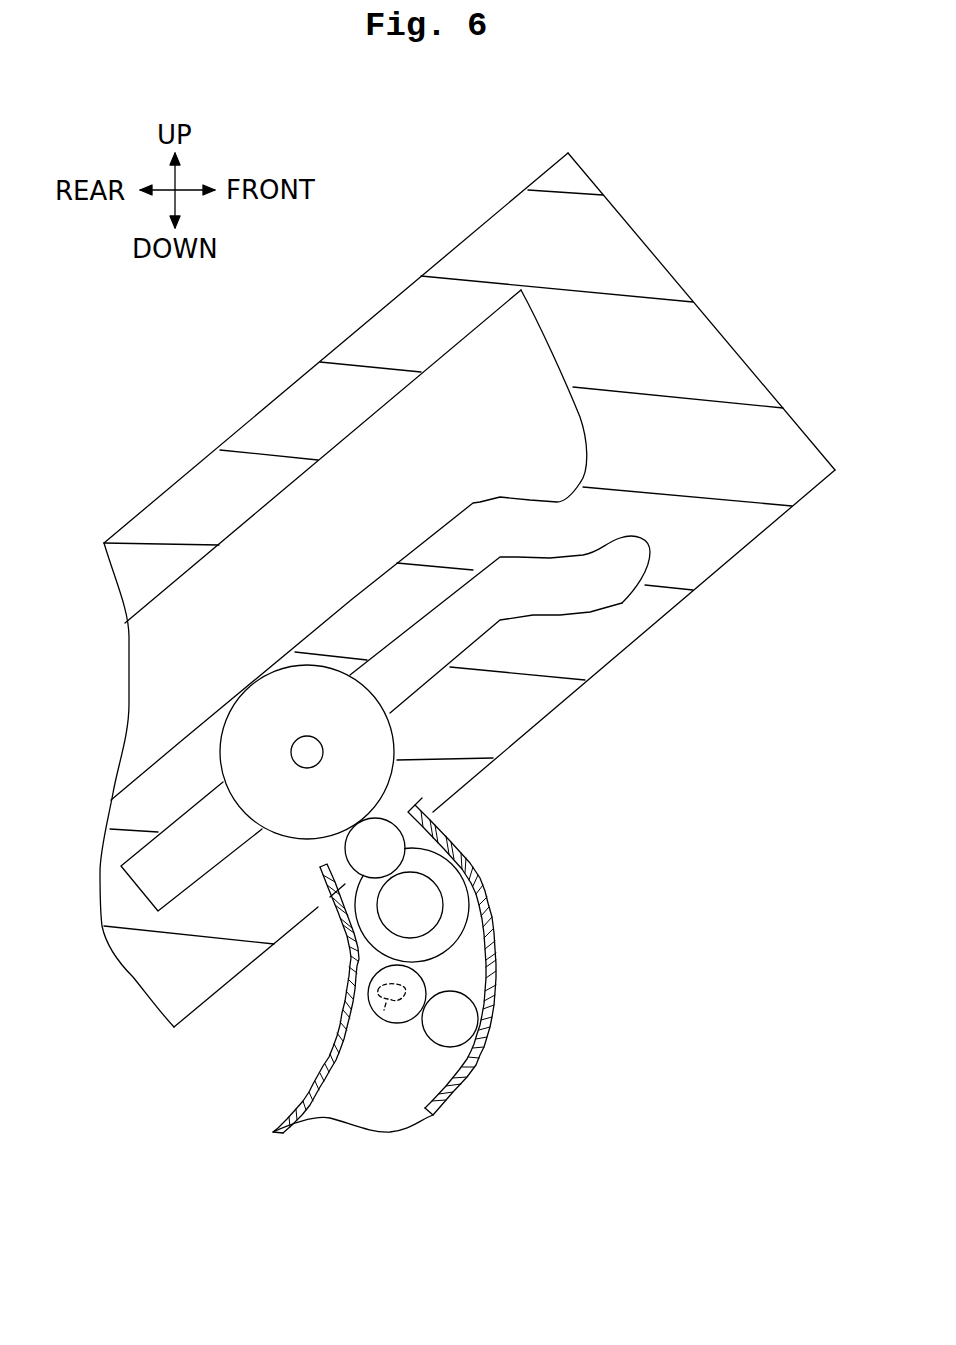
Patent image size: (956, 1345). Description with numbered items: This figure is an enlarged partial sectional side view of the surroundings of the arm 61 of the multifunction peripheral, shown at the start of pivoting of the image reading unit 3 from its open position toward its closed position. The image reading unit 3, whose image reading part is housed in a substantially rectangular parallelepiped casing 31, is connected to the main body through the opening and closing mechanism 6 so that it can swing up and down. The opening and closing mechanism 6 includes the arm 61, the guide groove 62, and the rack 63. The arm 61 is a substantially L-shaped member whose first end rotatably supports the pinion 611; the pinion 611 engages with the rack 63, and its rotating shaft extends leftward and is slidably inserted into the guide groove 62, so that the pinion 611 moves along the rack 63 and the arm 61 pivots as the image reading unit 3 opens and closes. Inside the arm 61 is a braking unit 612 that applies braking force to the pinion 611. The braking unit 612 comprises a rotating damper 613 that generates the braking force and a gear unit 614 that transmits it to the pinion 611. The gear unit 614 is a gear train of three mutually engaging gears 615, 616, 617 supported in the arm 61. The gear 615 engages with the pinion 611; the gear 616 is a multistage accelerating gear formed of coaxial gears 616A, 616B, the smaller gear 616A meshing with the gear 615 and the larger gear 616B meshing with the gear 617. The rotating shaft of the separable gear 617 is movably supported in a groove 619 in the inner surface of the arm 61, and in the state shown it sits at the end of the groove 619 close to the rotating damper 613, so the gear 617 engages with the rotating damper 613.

The image reading unit 3 is at (467, 565).
The casing 31 is at (410, 285).
The rack 63 is at (340, 442).
The guide groove 62 is at (621, 604).
The opening and closing mechanism 6 is at (450, 899).
The pinion 611 is at (397, 742).
The arm 61 is at (470, 1085).
The braking unit 612 is at (426, 951).
The gear unit 614 is at (409, 951).
The gear 615 is at (402, 830).
The gear 616 is at (445, 878).
The gear 616A is at (380, 908).
The gear 616B is at (372, 947).
The gear 617 is at (423, 982).
The groove 619 is at (382, 1014).
The rotating damper 613 is at (470, 1000).